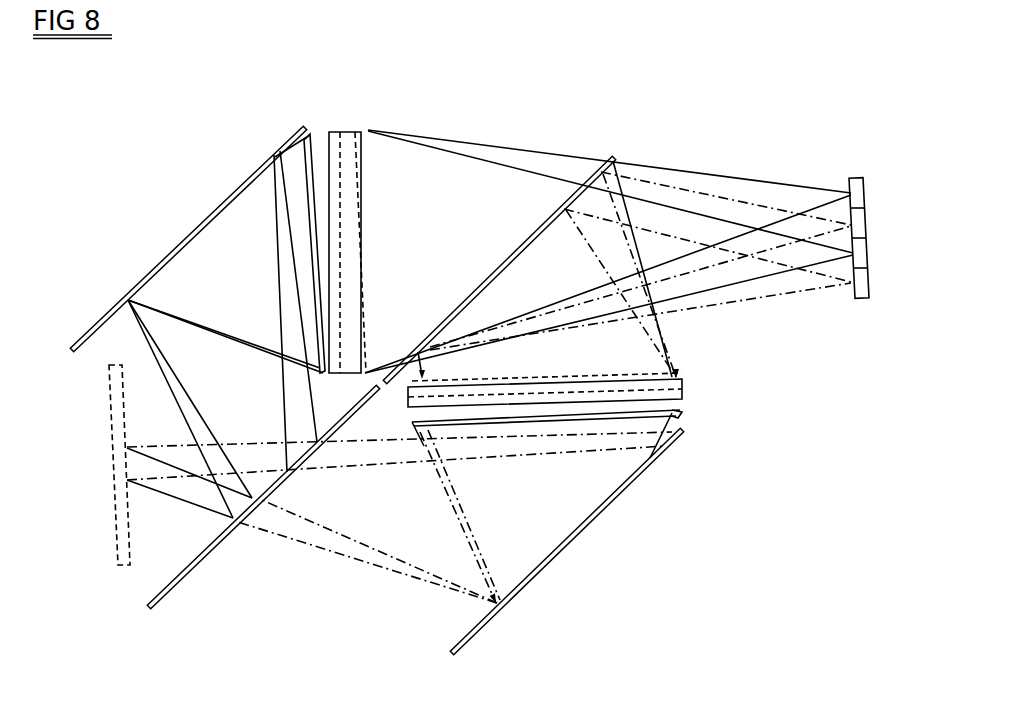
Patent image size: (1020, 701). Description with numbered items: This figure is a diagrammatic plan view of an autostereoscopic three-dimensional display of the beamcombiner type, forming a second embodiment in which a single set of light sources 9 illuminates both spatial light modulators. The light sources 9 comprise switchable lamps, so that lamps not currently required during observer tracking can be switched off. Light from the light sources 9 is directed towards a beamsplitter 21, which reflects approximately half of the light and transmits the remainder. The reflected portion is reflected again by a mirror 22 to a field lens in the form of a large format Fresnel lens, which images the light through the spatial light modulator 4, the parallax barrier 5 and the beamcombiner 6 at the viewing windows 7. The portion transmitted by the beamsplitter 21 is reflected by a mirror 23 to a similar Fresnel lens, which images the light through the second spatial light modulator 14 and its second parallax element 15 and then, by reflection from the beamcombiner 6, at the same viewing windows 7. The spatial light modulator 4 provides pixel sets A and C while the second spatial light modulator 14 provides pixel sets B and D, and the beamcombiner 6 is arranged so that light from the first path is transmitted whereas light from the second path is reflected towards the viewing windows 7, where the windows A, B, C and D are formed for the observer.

The spatial light modulator 4 is at (342, 130).
The parallax barrier 5 is at (358, 209).
The beamcombiner 6 is at (613, 160).
The viewing windows 7 is at (868, 308).
The light sources 9 is at (104, 465).
The second spatial light modulator 14 is at (719, 408).
The second parallax element 15 is at (623, 378).
The beamsplitter 21 is at (193, 575).
The mirror 22 is at (150, 262).
The mirror 23 is at (573, 542).